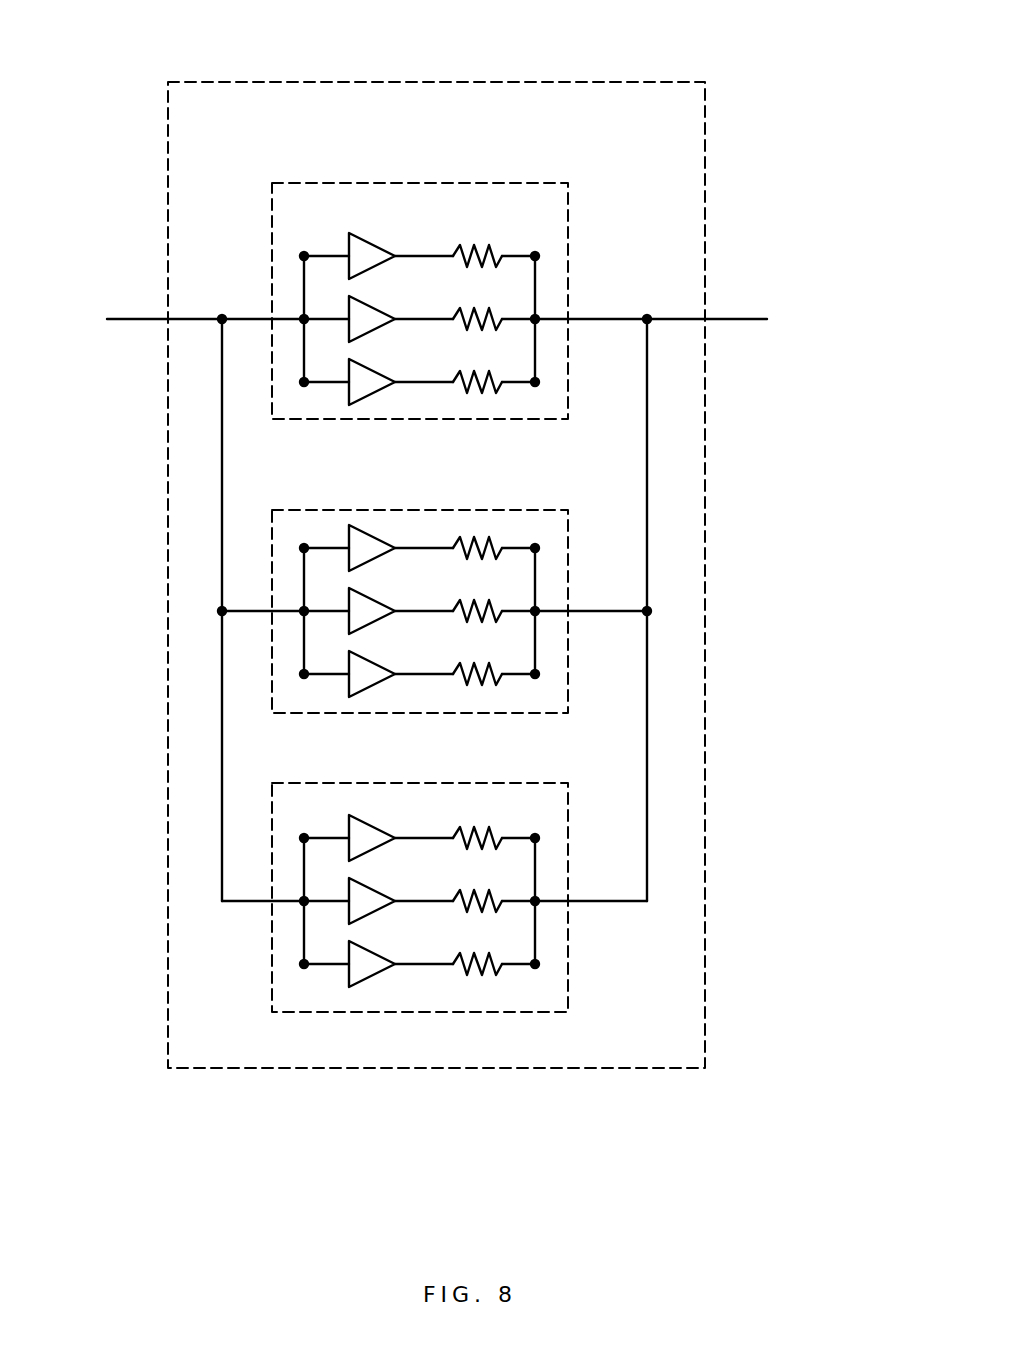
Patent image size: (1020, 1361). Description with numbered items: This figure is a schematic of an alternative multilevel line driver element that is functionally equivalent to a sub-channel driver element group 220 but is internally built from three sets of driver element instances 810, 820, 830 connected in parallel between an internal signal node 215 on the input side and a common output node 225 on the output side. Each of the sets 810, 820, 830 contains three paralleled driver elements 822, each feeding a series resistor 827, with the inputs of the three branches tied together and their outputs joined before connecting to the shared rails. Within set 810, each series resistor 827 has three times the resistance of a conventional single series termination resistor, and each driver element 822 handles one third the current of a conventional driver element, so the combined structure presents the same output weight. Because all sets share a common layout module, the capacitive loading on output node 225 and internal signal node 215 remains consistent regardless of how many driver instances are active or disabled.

The sub-channel driver element group 220 is at (676, 81).
The internal signal node 215 is at (141, 319).
The output node 225 is at (739, 319).
The set of driver element instances 810 is at (434, 285).
The set of driver element instances 820 is at (525, 510).
The set of driver element instances 830 is at (525, 783).
The driver element 822 is at (357, 233).
The series resistor 827 is at (455, 245).